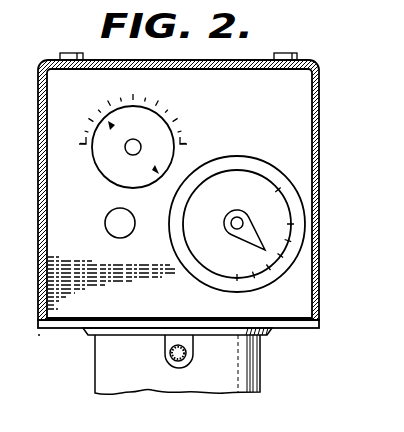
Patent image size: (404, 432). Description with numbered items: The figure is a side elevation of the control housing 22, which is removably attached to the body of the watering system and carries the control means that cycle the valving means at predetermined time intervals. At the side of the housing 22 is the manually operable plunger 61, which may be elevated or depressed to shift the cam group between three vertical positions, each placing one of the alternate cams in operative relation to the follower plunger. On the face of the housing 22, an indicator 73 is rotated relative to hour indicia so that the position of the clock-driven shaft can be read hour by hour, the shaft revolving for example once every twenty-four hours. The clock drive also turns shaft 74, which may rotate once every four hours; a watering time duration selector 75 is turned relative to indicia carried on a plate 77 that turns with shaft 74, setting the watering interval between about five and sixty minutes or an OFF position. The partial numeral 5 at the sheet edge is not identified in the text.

The control housing 22 is at (341, 67).
The manually operable plunger 61 is at (106, 220).
The mounting bracket 5 is at (20, 347).
The indicator 73 is at (112, 167).
The shaft 74 is at (231, 219).
The watering time duration selector 75 is at (252, 241).
The plate 77 is at (233, 176).